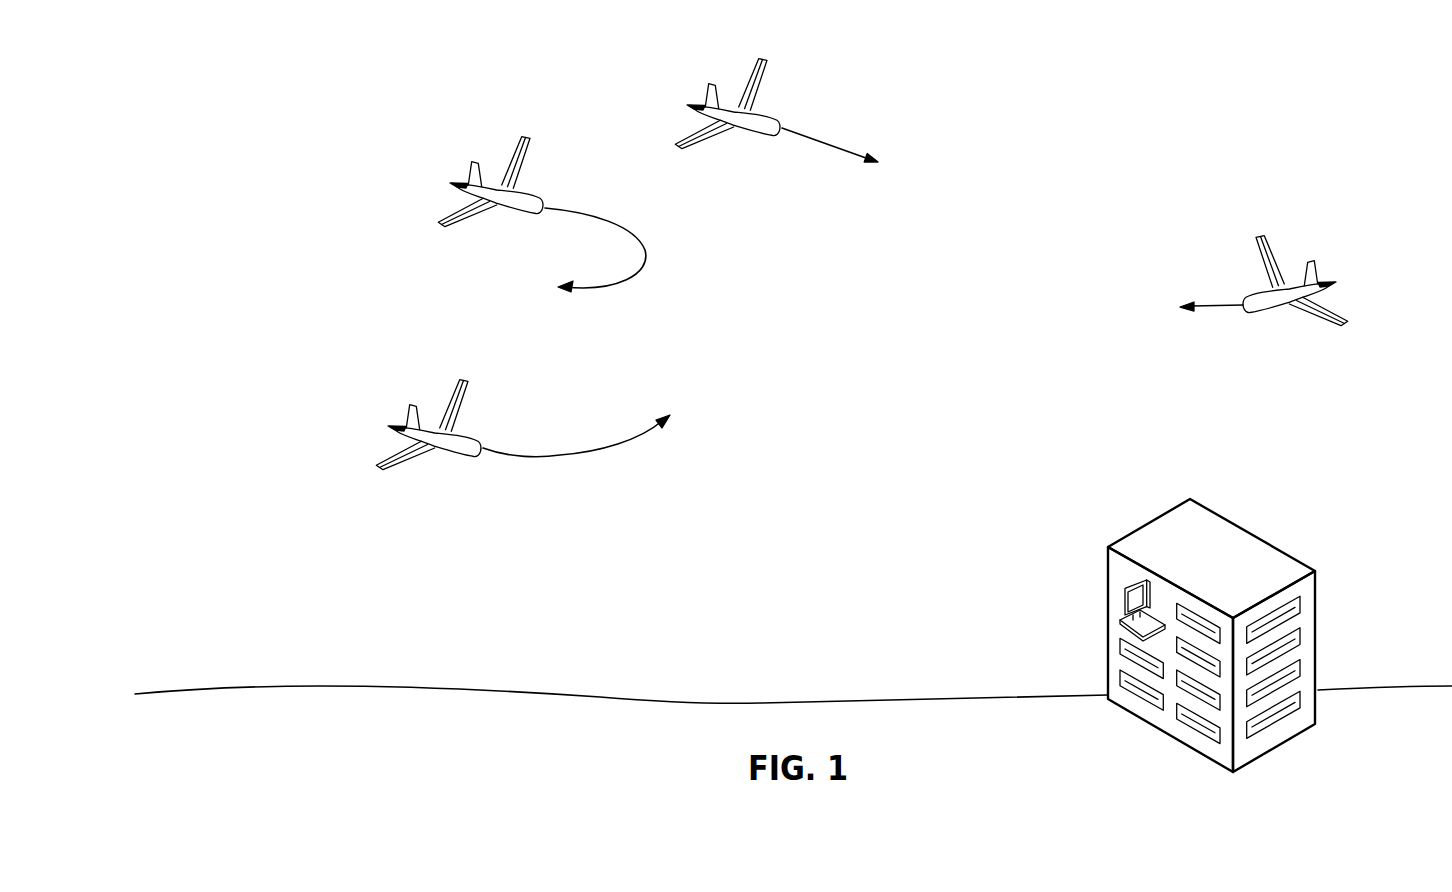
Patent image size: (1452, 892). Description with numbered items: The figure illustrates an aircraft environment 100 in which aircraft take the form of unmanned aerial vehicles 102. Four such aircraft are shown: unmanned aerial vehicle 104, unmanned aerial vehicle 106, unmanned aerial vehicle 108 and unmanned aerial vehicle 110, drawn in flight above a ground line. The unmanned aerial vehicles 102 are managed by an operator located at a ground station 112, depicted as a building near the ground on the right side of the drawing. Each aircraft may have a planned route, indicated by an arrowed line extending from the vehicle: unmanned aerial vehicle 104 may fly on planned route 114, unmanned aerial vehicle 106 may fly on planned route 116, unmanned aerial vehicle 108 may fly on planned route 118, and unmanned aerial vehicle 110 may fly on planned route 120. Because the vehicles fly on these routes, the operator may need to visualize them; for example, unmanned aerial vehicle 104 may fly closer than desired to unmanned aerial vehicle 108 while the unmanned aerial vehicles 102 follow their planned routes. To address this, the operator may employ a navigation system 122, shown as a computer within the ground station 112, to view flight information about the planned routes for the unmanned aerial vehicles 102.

The aircraft environment 100 is at (1078, 117).
The unmanned aerial vehicles 102 is at (408, 172).
The unmanned aerial vehicle 104 is at (528, 133).
The unmanned aerial vehicle 106 is at (1260, 235).
The unmanned aerial vehicle 108 is at (462, 380).
The unmanned aerial vehicle 110 is at (763, 57).
The ground station 112 is at (1150, 523).
The planned route 114 is at (604, 218).
The planned route 116 is at (1202, 303).
The planned route 118 is at (563, 453).
The planned route 120 is at (836, 145).
The navigation system 122 is at (1120, 605).